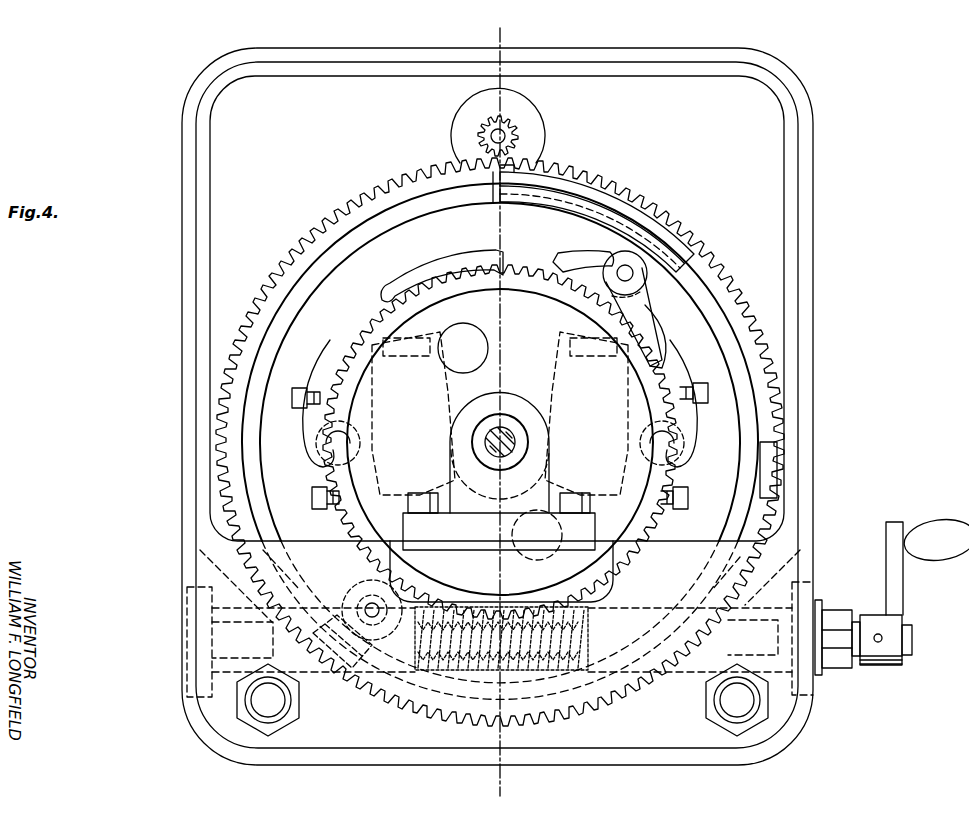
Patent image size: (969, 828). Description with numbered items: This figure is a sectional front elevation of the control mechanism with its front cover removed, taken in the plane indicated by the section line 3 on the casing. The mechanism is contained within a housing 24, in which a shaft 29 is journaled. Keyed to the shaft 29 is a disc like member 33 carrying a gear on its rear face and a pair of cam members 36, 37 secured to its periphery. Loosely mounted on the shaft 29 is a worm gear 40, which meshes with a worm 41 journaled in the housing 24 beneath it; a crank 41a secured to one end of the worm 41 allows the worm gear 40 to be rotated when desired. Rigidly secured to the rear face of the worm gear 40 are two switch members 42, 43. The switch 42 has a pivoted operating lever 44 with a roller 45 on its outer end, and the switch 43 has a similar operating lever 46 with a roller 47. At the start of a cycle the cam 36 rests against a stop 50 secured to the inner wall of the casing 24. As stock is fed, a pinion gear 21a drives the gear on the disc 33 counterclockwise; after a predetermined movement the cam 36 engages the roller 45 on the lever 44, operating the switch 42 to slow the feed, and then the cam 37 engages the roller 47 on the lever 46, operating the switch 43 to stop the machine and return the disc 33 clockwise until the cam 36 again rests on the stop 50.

The section line 3- 3 is at (490, 40).
The pinion gear 21a is at (518, 138).
The housing 24 is at (766, 218).
The shaft 29 is at (506, 432).
The disc like member 33 is at (712, 355).
The cam member 36 is at (592, 220).
The cam member 37 is at (360, 641).
The worm gear 40 is at (372, 326).
The worm 41 is at (590, 634).
The crank 41a is at (890, 576).
The switch member 42 is at (586, 413).
The switch member 43 is at (500, 442).
The operating lever 44 is at (640, 300).
The roller 45 is at (612, 264).
The operating lever 46 is at (362, 604).
The roller 47 is at (420, 592).
The stop 50 is at (768, 458).